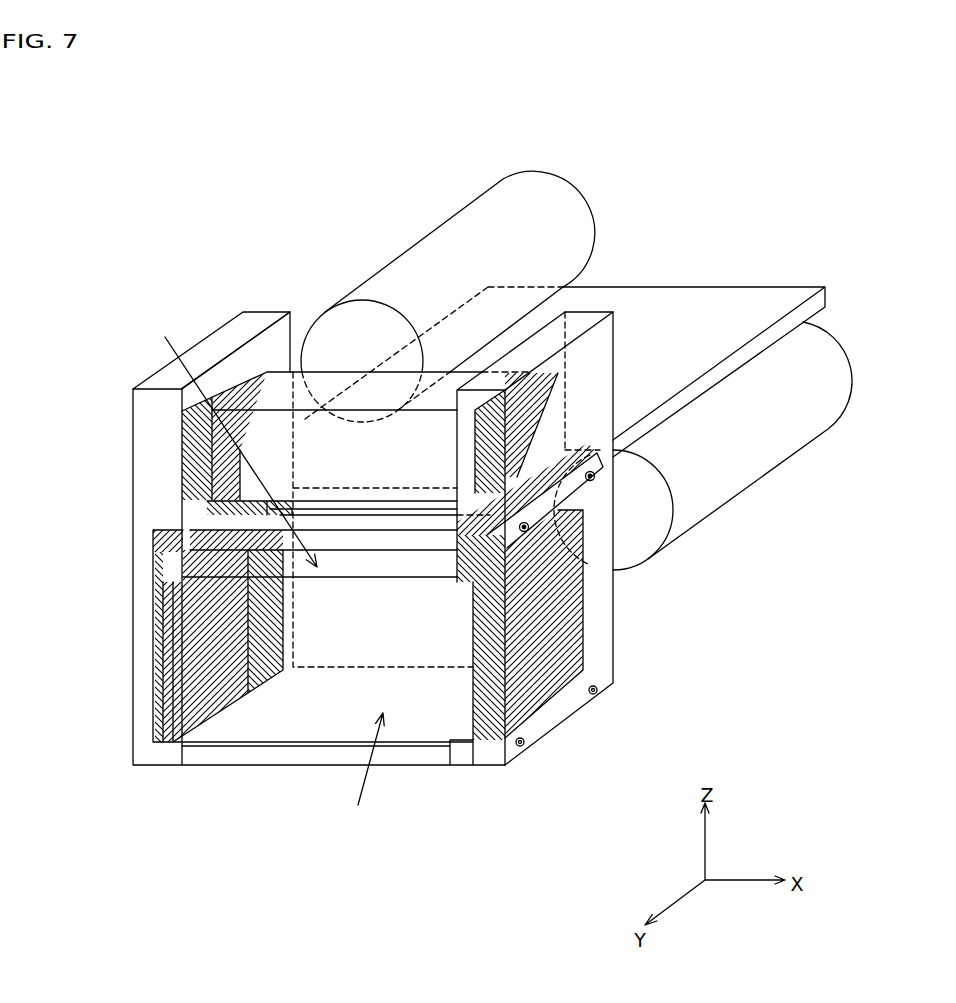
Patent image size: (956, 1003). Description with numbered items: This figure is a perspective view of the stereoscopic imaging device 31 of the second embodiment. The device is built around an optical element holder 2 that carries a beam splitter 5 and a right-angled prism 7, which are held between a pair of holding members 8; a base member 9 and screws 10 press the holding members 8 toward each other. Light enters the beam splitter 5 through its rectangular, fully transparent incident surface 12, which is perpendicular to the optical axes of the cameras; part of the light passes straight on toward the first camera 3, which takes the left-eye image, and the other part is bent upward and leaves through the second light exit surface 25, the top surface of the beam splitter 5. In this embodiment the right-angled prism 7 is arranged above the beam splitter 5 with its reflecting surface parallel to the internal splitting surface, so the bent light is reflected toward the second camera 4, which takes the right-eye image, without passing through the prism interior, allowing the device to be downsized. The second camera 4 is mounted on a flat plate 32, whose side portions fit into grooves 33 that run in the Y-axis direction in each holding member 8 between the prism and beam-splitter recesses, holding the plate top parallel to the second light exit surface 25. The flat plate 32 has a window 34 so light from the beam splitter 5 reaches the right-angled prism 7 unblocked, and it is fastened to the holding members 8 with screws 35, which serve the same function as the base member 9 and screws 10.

The optical element holder 2 is at (615, 684).
The first camera 3 is at (736, 482).
The second camera 4 is at (583, 203).
The beam splitter 5 is at (280, 726).
The right-angled prism 7 is at (237, 370).
The holding members 8 is at (258, 318).
The base member 9 is at (418, 767).
The screws 10 is at (598, 696).
The incident surface 12 is at (367, 771).
The second light exit surface 25 is at (226, 440).
The stereoscopic imaging device 31 is at (578, 359).
The flat plate 32 is at (780, 292).
The groove 33 is at (175, 545).
The window 34 is at (182, 497).
The screws 35 is at (597, 481).